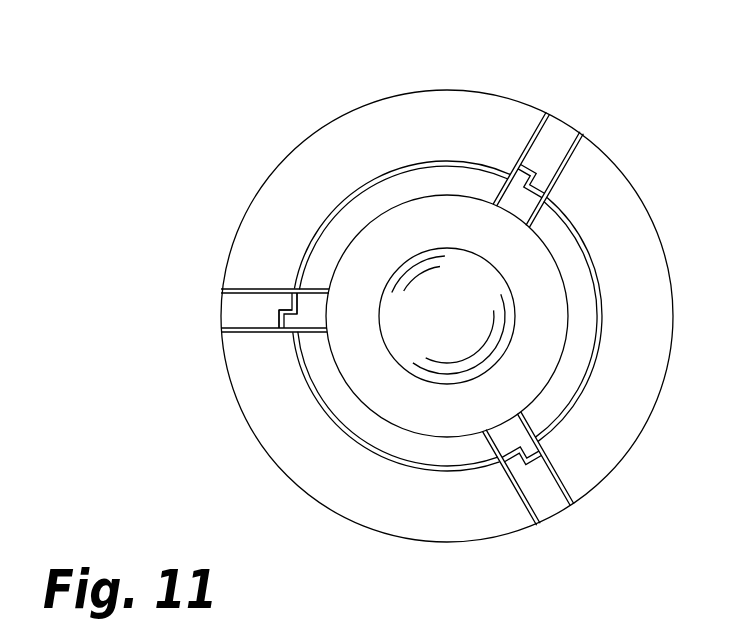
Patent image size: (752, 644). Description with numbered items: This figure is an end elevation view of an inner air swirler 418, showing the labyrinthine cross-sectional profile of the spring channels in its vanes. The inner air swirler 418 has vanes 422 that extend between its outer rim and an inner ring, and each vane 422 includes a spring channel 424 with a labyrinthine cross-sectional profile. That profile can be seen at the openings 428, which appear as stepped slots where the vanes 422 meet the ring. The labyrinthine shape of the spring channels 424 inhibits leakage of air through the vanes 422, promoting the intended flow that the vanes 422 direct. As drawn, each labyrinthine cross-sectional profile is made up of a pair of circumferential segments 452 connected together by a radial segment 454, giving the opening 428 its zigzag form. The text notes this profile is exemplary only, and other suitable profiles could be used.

The inner air swirler 418 is at (227, 88).
The vanes 422 is at (230, 313).
The spring channel 424 is at (353, 190).
The openings 428 is at (518, 158).
The circumferential segments 452 is at (279, 313).
The radial segment 454 is at (281, 300).